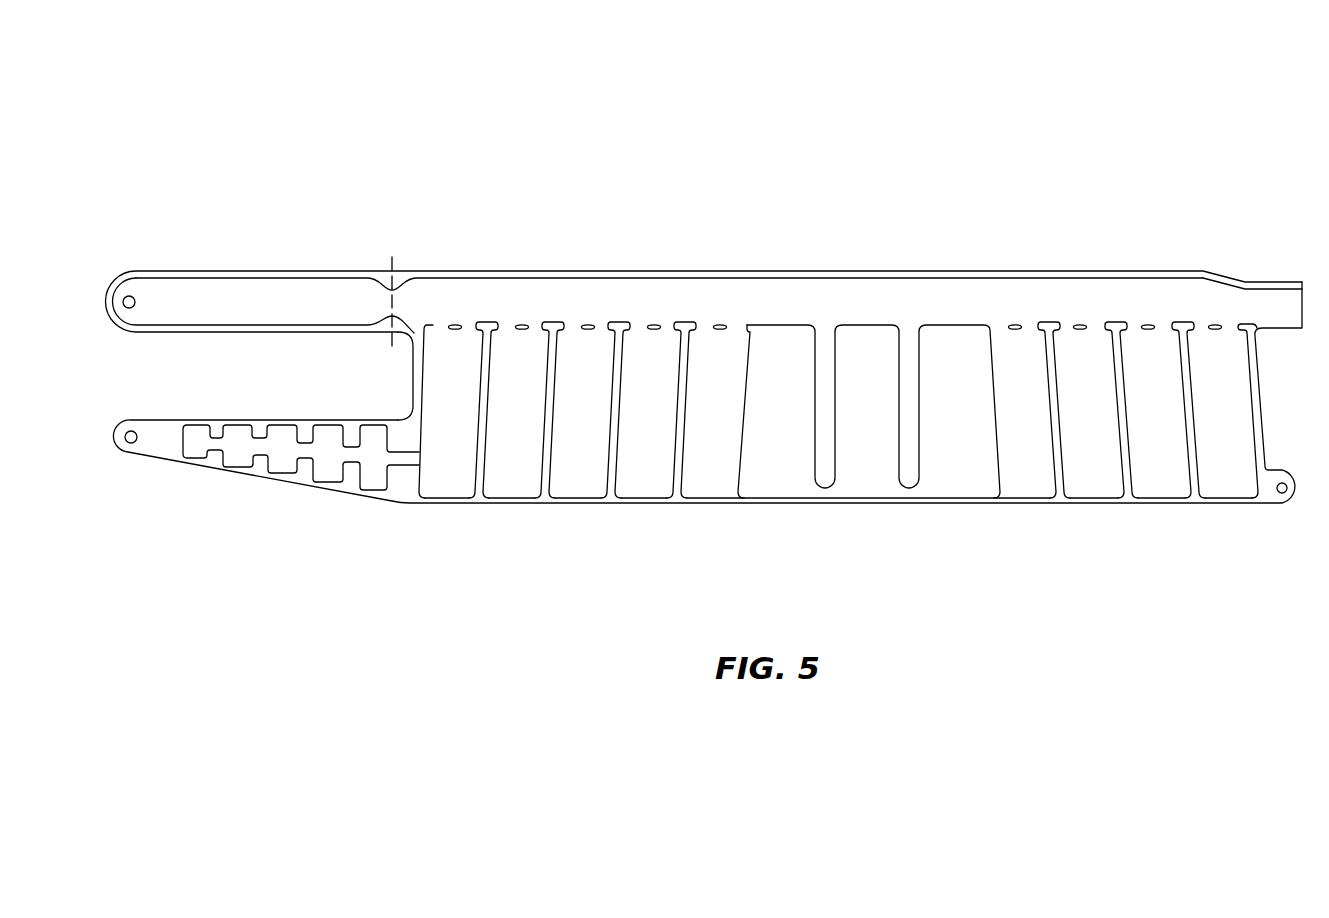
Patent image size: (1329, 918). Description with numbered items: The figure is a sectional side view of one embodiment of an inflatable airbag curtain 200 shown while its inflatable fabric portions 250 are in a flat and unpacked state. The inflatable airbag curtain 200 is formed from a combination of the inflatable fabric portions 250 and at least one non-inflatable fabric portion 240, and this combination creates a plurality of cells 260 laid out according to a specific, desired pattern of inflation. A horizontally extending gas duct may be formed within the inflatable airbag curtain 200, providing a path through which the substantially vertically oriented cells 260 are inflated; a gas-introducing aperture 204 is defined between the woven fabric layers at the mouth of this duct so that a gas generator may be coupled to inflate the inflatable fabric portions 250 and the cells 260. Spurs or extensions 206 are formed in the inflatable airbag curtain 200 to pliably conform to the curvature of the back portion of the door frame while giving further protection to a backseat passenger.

The inflatable airbag curtain 200 is at (170, 157).
The gas-introducing aperture 204 is at (1318, 300).
The spurs or extensions 206 is at (110, 327).
The non-inflatable fabric portion 240 is at (967, 399).
The inflatable fabric portions 250 is at (257, 292).
The cells 260 is at (447, 483).